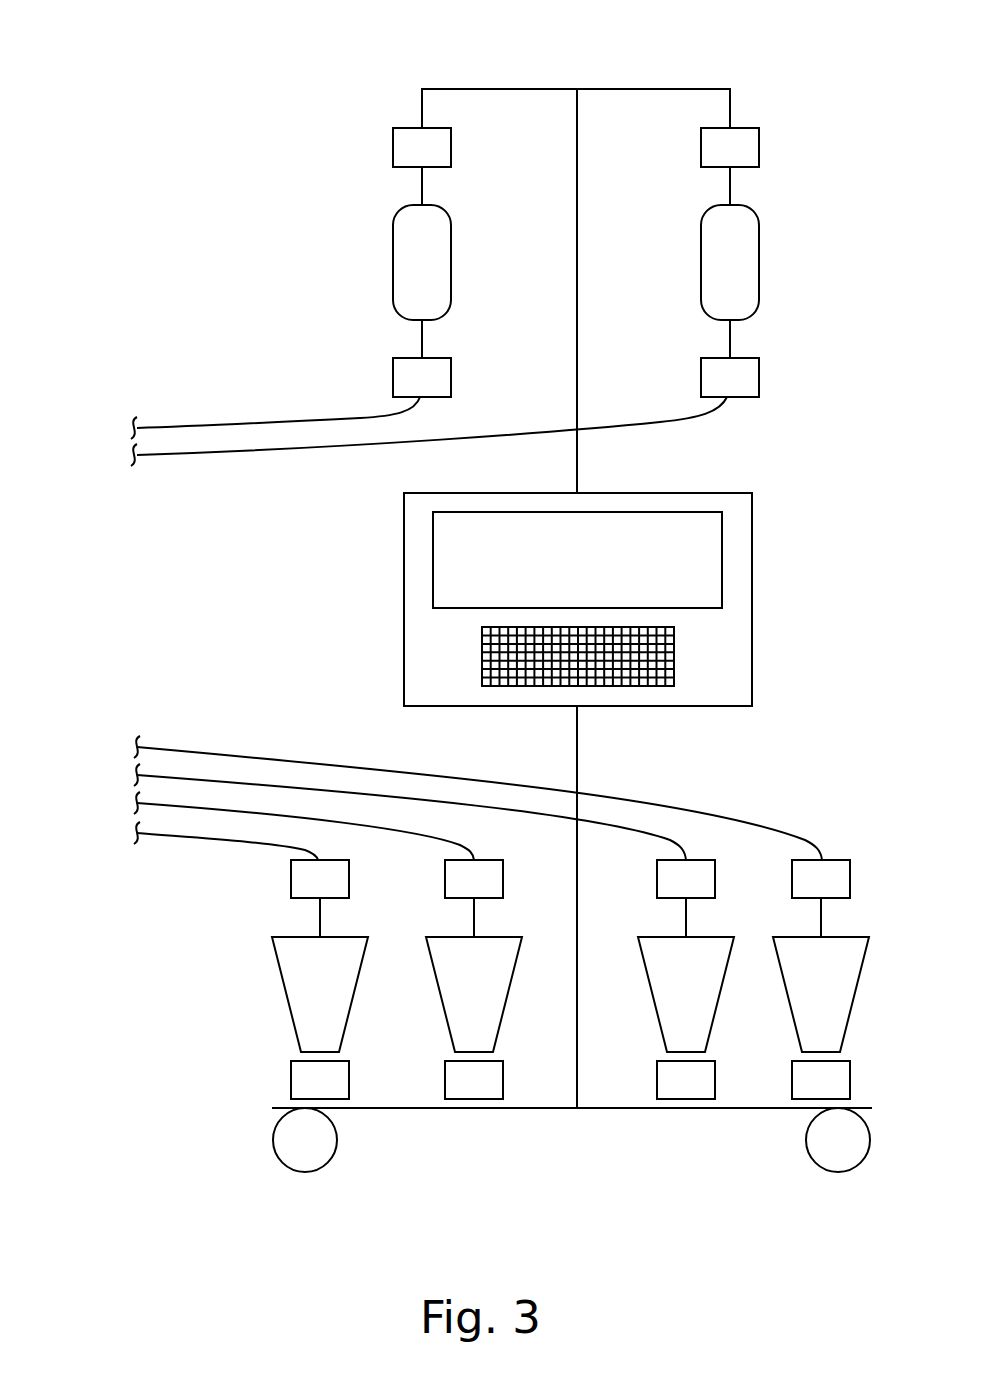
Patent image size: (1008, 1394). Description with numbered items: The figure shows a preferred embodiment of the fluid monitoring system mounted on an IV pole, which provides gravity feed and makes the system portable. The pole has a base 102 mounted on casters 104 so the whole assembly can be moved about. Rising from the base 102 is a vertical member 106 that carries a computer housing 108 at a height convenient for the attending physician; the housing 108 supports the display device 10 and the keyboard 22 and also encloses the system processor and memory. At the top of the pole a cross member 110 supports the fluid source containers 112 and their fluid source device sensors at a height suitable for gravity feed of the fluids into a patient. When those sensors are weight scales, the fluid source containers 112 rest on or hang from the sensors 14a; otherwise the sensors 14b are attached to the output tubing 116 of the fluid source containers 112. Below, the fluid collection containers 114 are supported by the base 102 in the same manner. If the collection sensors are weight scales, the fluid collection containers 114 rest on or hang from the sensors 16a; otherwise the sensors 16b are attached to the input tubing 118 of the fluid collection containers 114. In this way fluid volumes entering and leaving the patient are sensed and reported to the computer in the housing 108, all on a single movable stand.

The cross member 110 is at (612, 89).
The fluid source device sensors 14a is at (576, 166).
The fluid source containers 112 is at (576, 281).
The fluid source device sensors 14b is at (576, 377).
The output tubing 116 is at (170, 454).
The vertical member 106 is at (577, 452).
The computer housing 108 is at (752, 615).
The display device 10 is at (422, 548).
The keyboard 22 is at (471, 665).
The input tubing 118 is at (134, 775).
The fluid collection device sensors 16b is at (570, 898).
The fluid collection containers 114 is at (570, 994).
The fluid collection device sensors 16a is at (570, 1080).
The base 102 is at (522, 1108).
The casters 104 is at (338, 1147).